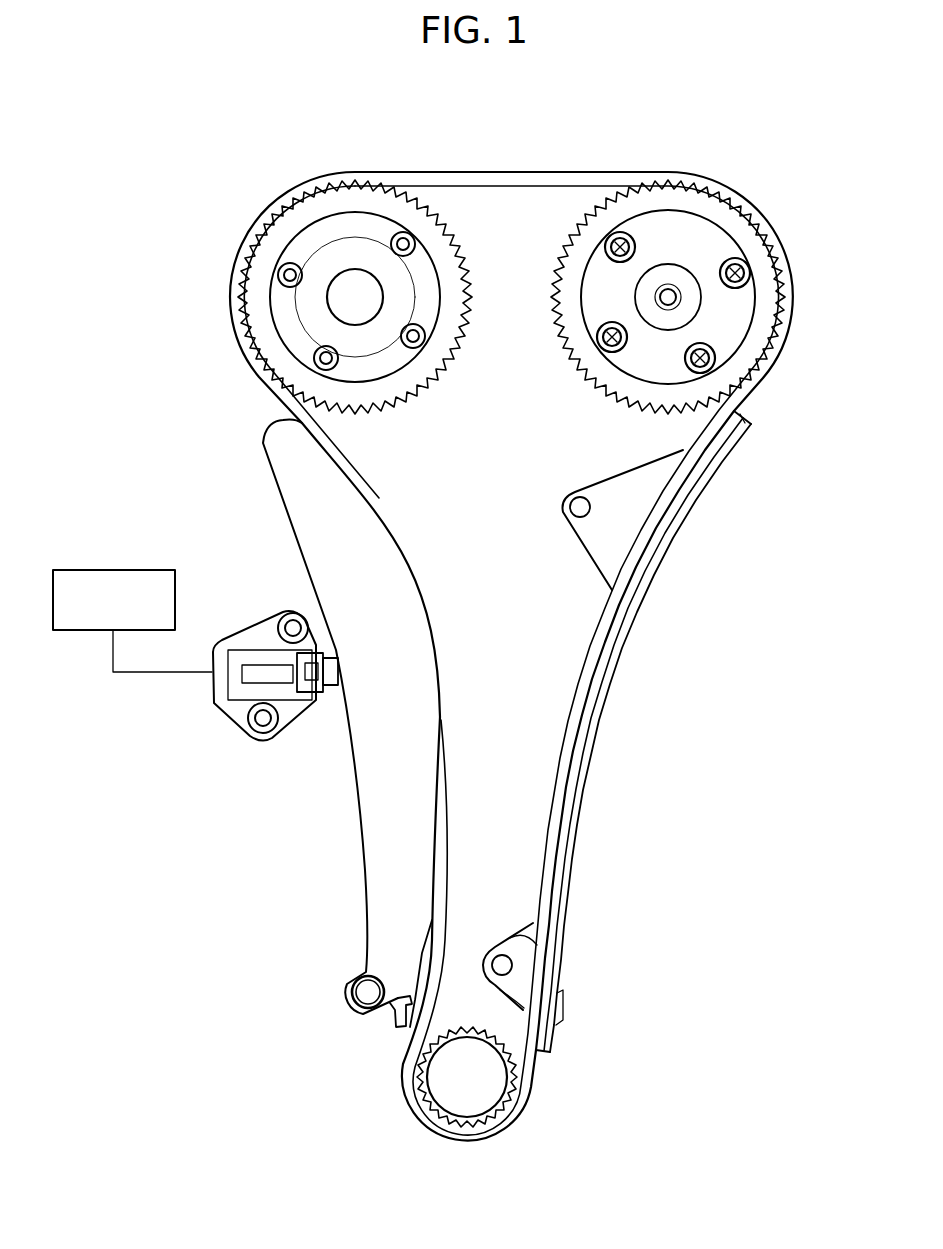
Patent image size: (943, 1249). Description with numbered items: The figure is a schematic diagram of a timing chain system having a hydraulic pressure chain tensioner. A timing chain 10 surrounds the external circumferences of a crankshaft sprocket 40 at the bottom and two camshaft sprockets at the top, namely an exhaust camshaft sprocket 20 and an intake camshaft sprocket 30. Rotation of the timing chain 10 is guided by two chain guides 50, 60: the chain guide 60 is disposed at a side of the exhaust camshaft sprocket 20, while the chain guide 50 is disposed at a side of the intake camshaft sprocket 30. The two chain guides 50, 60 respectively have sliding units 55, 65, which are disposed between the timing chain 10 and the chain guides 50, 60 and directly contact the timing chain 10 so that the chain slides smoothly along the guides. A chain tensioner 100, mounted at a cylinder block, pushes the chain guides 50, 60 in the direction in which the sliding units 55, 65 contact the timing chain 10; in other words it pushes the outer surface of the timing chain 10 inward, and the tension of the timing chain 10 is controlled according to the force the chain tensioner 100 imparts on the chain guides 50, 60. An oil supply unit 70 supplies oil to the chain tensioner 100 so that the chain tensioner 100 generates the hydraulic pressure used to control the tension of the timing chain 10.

The timing chain 10 is at (515, 172).
The exhaust camshaft sprocket 20 is at (318, 243).
The intake camshaft sprocket 30 is at (710, 238).
The crankshaft sprocket 40 is at (470, 1015).
The chain guide 50 is at (620, 498).
The sliding unit 55 is at (612, 655).
The chain guide 60 is at (347, 557).
The sliding unit 65 is at (395, 1018).
The oil supply unit 70 is at (114, 570).
The chain tensioner 100 is at (220, 726).